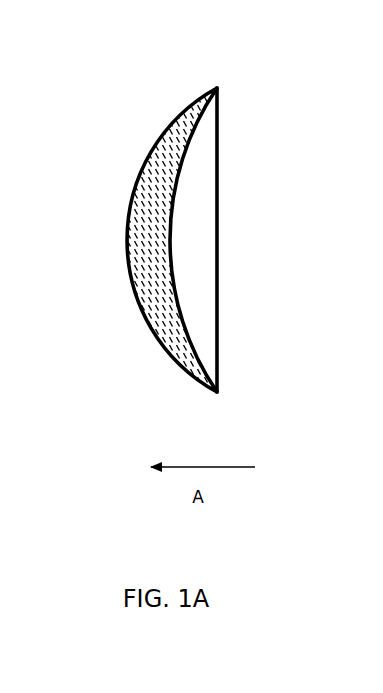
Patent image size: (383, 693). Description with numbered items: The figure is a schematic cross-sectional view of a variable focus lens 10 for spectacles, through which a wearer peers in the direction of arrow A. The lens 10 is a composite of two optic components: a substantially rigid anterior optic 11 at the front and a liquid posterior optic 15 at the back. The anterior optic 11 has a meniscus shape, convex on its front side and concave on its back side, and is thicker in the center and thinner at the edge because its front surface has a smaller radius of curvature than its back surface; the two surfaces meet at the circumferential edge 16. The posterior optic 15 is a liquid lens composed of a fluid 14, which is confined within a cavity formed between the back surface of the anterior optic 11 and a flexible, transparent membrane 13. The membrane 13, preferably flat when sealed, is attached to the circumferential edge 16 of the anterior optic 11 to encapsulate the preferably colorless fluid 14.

The variable focus lens 10 is at (128, 345).
The anterior optic 11 is at (148, 183).
The membrane 13 is at (218, 330).
The fluid 14 is at (196, 185).
The posterior optic 15 is at (197, 266).
The circumferential edge 16 is at (218, 88).